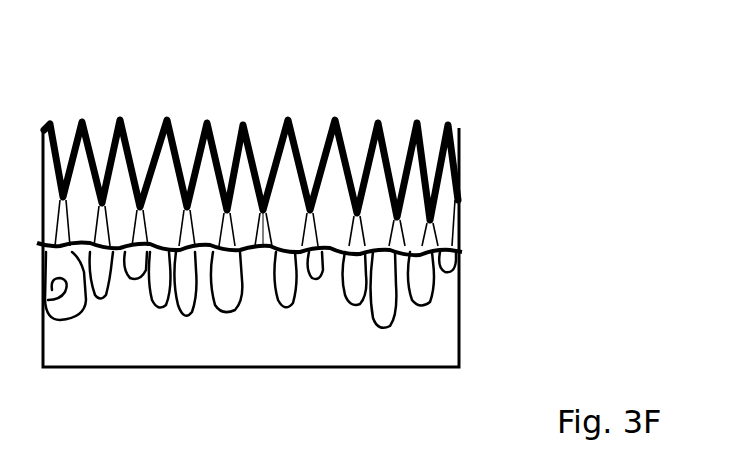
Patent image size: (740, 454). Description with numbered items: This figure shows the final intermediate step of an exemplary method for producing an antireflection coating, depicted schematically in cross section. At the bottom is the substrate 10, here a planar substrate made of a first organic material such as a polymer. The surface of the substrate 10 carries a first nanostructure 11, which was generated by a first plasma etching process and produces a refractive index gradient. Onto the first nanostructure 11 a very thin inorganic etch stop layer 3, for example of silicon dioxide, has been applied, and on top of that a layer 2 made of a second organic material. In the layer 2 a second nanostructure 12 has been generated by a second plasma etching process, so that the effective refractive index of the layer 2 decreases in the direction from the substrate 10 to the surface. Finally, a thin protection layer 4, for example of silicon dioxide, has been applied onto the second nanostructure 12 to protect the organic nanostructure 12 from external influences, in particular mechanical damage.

The layer made of a second organic material 2 is at (427, 175).
The etch stop layer 3 is at (264, 248).
The protection layer 4 is at (204, 127).
The substrate 10 is at (425, 342).
The first nanostructure 11 is at (350, 267).
The second nanostructure 12 is at (153, 160).